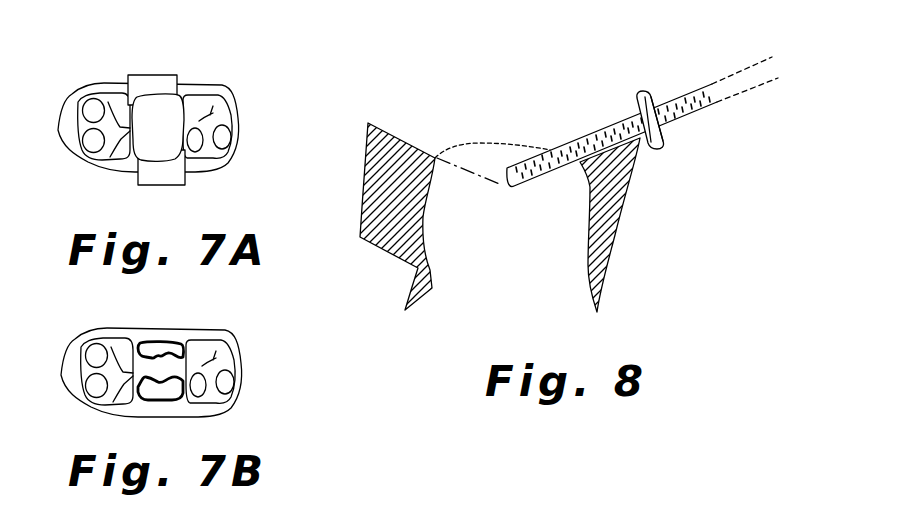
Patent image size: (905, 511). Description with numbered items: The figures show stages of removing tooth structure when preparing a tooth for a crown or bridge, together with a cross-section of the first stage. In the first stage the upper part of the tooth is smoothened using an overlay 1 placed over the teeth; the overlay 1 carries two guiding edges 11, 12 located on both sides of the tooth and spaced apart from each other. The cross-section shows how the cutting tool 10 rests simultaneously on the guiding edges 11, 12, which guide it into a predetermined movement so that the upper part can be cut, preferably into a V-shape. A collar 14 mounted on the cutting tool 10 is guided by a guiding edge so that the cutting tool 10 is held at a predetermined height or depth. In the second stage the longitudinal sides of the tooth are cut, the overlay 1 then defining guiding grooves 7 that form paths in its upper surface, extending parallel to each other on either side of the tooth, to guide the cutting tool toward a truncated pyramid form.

In FIG. 7A, the overlay 1 is at (252, 97).
In FIG. 7B, the overlay 1 is at (273, 360).
In FIG. 7B, the guiding groove 7 is at (185, 435).
In FIG. 8, the cutting tool 10 is at (608, 138).
In FIG. 7A, the guiding edge 11 is at (152, 97).
In FIG. 8, the guiding edge 11 is at (578, 165).
In FIG. 7A, the guiding edge 12 is at (177, 208).
In FIG. 8, the guiding edge 12 is at (648, 140).
In FIG. 8, the collar 14 is at (657, 123).